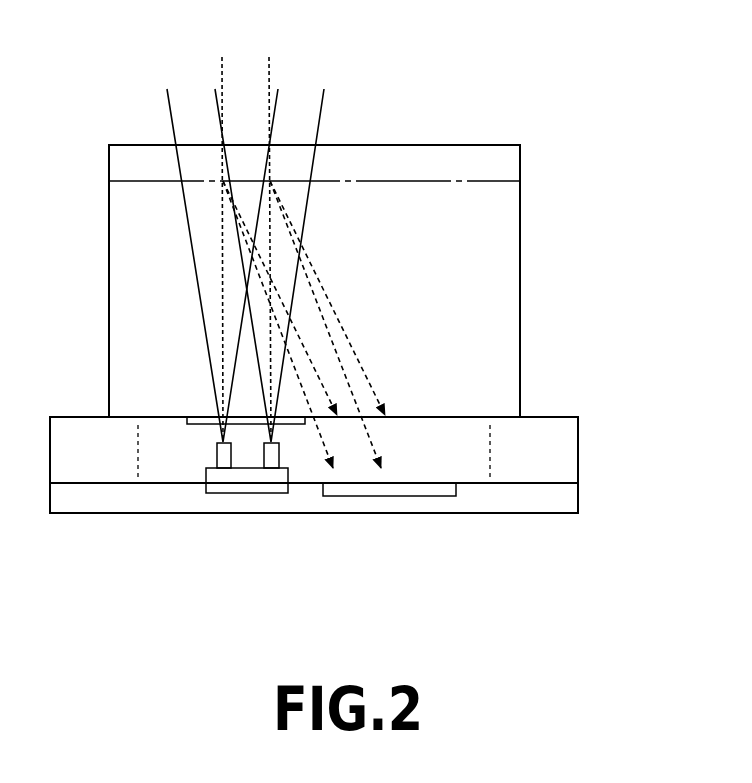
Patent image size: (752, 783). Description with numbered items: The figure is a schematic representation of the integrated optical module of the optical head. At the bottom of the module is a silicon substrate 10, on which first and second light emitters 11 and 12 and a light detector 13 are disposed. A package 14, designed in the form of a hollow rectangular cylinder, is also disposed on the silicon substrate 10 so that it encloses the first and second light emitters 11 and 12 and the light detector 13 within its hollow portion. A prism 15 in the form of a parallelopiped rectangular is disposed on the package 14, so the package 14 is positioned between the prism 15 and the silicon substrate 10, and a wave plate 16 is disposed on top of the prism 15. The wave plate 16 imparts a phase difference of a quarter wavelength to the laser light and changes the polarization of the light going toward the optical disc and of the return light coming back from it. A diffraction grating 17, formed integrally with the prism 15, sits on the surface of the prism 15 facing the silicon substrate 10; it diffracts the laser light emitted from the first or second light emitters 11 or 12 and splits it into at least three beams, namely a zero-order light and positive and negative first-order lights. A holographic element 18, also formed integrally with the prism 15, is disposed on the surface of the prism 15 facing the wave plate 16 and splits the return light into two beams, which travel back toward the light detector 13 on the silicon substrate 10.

The silicon substrate 10 is at (568, 498).
The first light emitter 11 is at (225, 460).
The second light emitter 12 is at (270, 458).
The light detector 13 is at (380, 488).
The package 14 is at (560, 450).
The prism 15 is at (507, 321).
The wave plate 16 is at (507, 166).
The diffraction grating 17 is at (197, 417).
The holographic element 18 is at (155, 182).